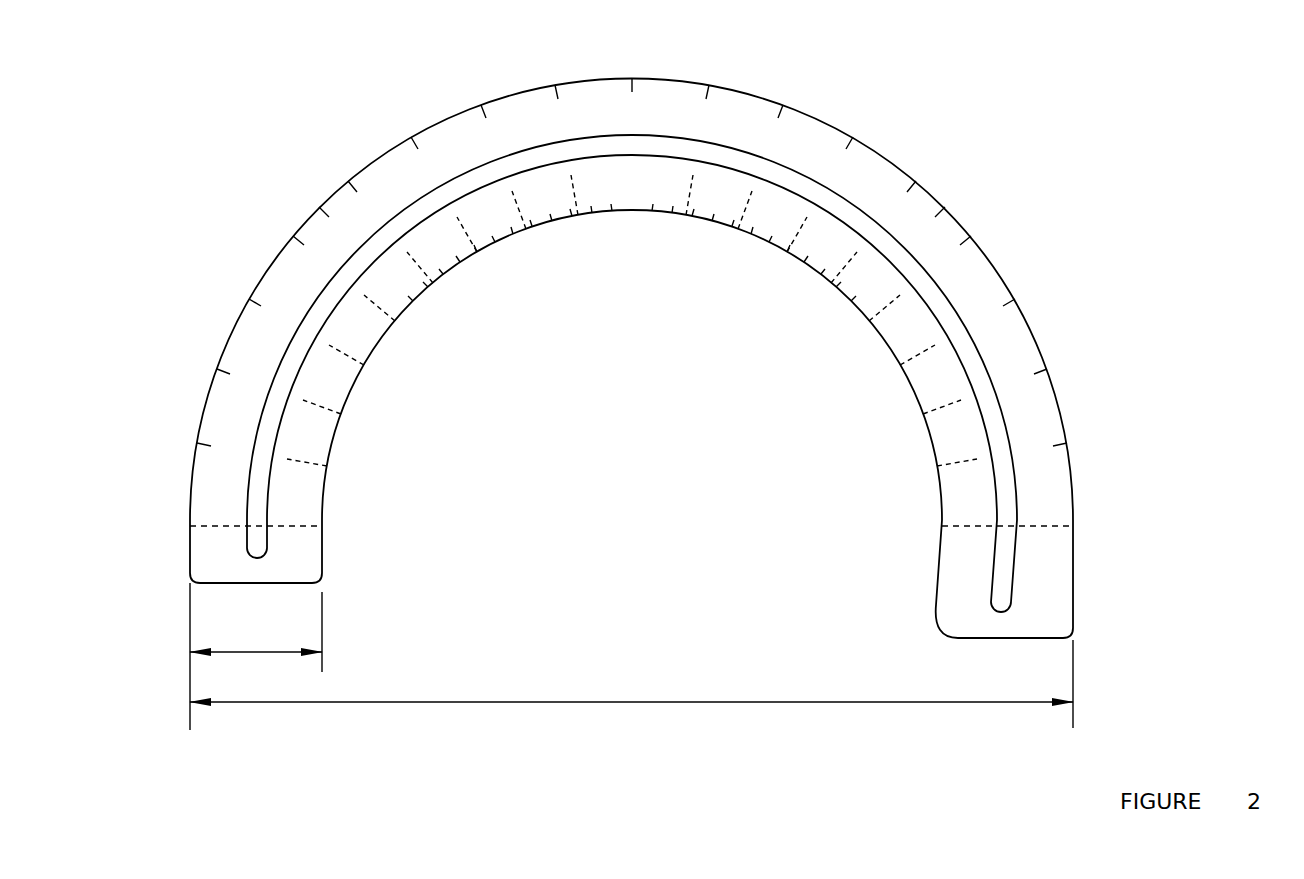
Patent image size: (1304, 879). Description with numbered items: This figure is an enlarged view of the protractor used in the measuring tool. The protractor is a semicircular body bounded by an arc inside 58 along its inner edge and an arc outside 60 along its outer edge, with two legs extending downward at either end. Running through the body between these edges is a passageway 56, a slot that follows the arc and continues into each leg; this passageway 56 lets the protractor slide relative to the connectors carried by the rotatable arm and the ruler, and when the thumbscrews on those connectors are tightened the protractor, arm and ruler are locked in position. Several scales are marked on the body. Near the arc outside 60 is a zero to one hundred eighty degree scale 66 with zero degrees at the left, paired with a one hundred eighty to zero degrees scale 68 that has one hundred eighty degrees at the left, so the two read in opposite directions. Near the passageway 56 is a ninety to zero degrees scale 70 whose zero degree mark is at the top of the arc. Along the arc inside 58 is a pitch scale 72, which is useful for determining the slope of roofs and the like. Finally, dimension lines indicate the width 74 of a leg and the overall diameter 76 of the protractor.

The passageway 56 is at (1006, 517).
The arc inside 58 is at (330, 463).
The arc outside 60 is at (1058, 408).
The 0 to 180 degree scale 66 is at (885, 207).
The 180 to 0 degrees scale 68 is at (1010, 307).
The 90 to 0 degrees scale 70 is at (703, 173).
The pitch scale 72 is at (463, 260).
The width 74 is at (256, 656).
The diameter 76 is at (631, 684).